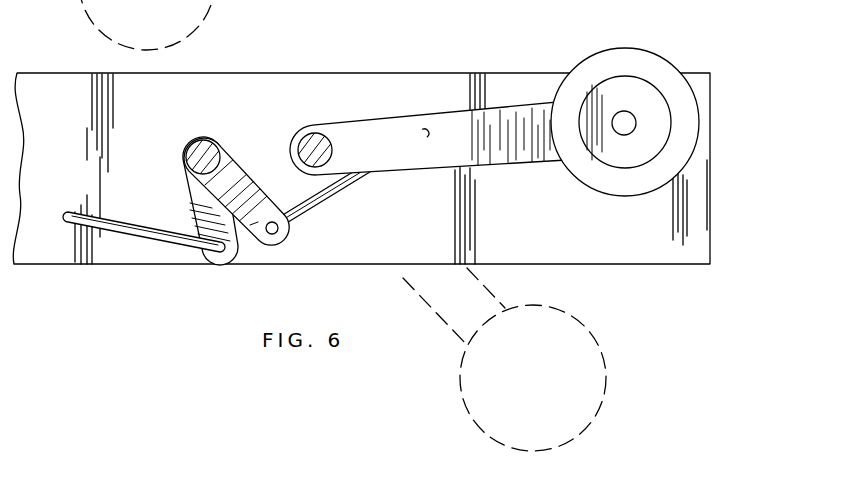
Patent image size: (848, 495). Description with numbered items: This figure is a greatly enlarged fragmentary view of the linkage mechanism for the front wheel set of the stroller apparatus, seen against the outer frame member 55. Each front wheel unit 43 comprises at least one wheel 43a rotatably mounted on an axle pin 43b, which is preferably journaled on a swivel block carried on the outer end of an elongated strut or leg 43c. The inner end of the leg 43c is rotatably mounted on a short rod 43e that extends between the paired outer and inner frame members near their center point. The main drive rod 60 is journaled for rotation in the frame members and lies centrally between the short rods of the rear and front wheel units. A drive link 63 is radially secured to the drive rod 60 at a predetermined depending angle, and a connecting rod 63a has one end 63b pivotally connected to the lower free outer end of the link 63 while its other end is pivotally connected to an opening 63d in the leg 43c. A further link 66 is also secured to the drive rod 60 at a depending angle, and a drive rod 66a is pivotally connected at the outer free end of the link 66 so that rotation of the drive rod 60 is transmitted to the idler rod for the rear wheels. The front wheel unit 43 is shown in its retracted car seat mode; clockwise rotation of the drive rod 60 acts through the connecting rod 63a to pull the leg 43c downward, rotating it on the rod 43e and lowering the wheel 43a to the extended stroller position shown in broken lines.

The front wheel unit 43 is at (570, 180).
The wheel 43a is at (632, 57).
The axle pin 43b is at (628, 130).
The leg 43c is at (487, 122).
The short rod 43e is at (321, 133).
The outer frame member 55 is at (310, 85).
The main drive rod 60 is at (213, 140).
The drive link 63 is at (255, 225).
The connecting rod 63a is at (334, 197).
The end of connecting rod 63b is at (276, 232).
The opening in leg 63d is at (428, 128).
The link 66 is at (200, 203).
The drive rod 66a is at (120, 228).